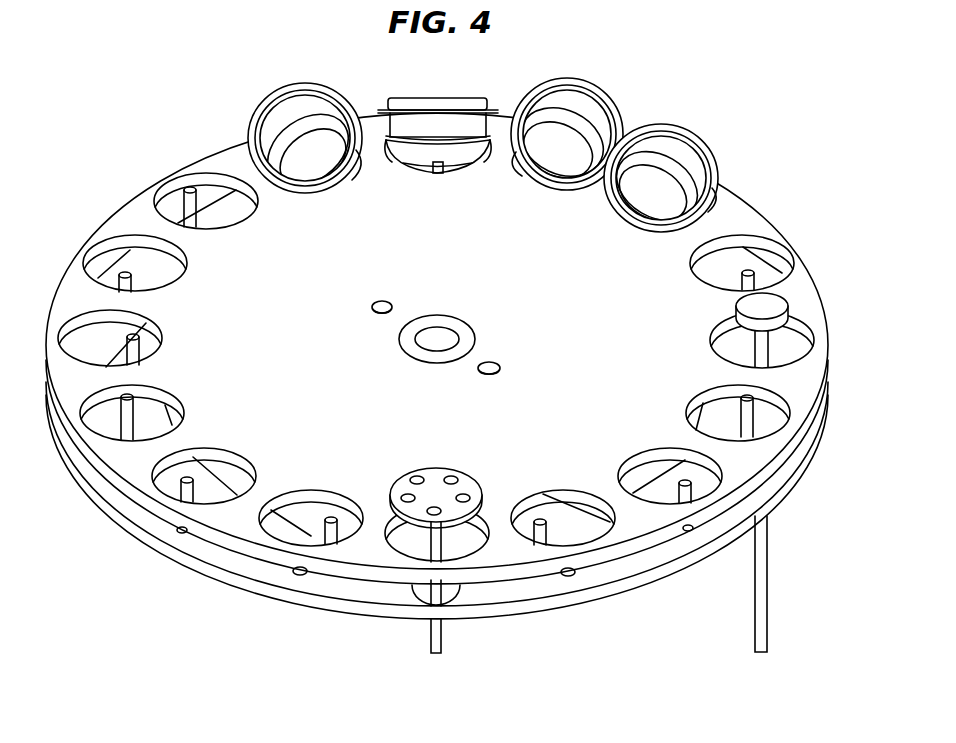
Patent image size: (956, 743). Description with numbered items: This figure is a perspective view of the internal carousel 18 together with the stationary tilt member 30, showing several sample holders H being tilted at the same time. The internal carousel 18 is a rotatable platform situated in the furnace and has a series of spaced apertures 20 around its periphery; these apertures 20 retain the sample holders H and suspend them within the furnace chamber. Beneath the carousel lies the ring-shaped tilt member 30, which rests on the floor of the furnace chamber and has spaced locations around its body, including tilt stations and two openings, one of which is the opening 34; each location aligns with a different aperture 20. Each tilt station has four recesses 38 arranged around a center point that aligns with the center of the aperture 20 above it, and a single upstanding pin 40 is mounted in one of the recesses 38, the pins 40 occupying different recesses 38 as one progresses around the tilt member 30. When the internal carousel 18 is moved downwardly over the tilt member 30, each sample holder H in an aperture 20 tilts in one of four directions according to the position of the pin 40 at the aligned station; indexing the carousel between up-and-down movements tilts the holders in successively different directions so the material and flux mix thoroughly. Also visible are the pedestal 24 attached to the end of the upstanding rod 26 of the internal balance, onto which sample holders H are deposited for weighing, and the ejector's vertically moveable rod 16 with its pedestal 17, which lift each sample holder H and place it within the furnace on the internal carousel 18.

The ejector rod 16 is at (442, 645).
The pedestal 17 is at (436, 472).
The internal carousel 18 is at (595, 419).
The apertures 20 is at (170, 207).
The pedestal 24 is at (780, 308).
The upstanding rod 26 is at (767, 565).
The tilt member 30 is at (800, 462).
The opening 34 is at (413, 587).
The recesses 38 is at (300, 575).
The upstanding pin 40 is at (192, 215).
The sample holder H is at (282, 108).